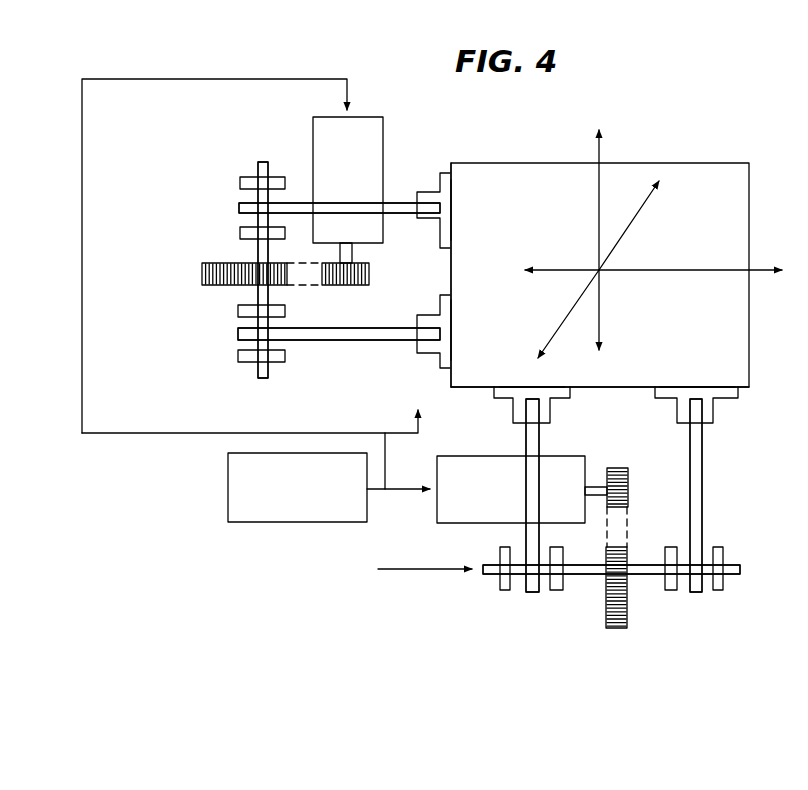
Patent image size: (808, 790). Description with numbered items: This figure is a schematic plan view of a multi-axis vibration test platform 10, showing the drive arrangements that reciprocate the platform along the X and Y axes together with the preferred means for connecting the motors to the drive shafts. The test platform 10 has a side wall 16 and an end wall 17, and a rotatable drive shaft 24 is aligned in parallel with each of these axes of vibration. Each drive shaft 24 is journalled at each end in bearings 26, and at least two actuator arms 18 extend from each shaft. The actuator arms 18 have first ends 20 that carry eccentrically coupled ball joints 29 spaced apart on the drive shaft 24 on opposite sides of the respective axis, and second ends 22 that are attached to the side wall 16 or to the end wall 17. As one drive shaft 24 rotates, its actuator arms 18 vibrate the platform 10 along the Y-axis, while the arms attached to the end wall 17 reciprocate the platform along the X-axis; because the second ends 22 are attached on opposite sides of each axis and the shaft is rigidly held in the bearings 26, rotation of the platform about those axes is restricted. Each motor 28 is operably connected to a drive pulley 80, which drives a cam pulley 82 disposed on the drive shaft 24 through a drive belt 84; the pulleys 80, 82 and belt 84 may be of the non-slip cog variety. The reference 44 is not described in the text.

The multi-axis vibration test platform 10 is at (738, 163).
The side wall 16 is at (737, 382).
The end wall 17 is at (453, 180).
The actuator arms 18 is at (401, 201).
The first ends 20 is at (236, 208).
The second ends 22 is at (428, 222).
The rotatable drive shafts 24 is at (258, 290).
The bearings 26 is at (253, 175).
The motors 28 is at (383, 117).
The eccentrically coupled ball joints 29 is at (268, 200).
The guide surface 44 is at (453, 201).
The drive pulley 80 is at (359, 289).
The cam pulley 82 is at (198, 266).
The drive belt 84 is at (305, 291).